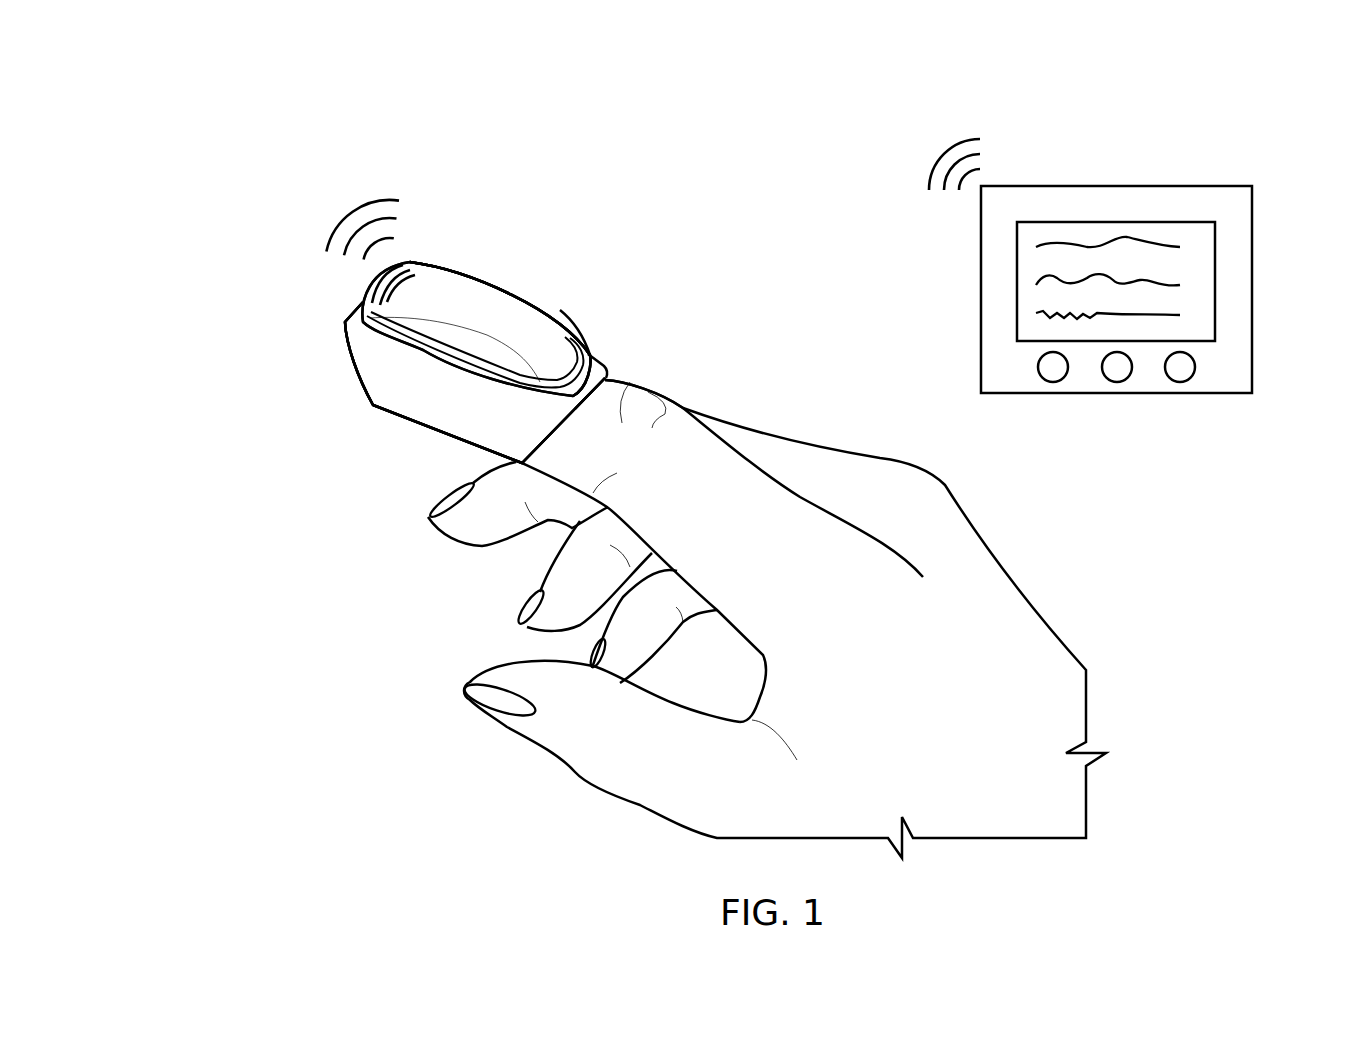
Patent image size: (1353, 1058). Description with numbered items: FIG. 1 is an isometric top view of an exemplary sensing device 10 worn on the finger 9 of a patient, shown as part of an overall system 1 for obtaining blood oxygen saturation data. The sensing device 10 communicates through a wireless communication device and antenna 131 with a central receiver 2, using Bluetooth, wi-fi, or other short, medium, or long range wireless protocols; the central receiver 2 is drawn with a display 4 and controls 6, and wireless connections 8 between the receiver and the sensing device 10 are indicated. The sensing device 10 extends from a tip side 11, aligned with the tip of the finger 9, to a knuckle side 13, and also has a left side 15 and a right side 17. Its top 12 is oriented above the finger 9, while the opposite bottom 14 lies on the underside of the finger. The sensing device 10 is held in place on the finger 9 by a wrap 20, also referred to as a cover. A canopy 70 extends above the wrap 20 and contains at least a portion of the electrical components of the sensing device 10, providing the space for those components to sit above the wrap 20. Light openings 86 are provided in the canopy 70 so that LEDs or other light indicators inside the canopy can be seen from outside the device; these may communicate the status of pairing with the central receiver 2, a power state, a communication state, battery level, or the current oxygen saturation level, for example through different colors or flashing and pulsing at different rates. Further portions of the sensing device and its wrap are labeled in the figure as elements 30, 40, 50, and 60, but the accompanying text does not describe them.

The overall system 1 is at (386, 120).
The sensing device 10 is at (203, 197).
The central receiver 2 is at (1213, 154).
The display 4 is at (1200, 268).
The controls 6 is at (1117, 372).
The wireless connections 8 is at (933, 170).
The wireless communication device and antenna 131 is at (332, 238).
The top 12 is at (432, 270).
The right side 17 is at (478, 258).
The canopy 70 is at (497, 303).
The distal end of housing 60 is at (577, 315).
The clip end 30 is at (607, 370).
The finger 9 is at (660, 366).
The tip side 11 is at (325, 312).
The proximal wall 40 is at (353, 340).
The wrap 20 is at (350, 385).
The lower housing portion 50 is at (397, 397).
The bottom 14 is at (413, 438).
The left side 15 is at (428, 486).
The knuckle side 13 is at (583, 437).
The light openings 86 is at (372, 280).